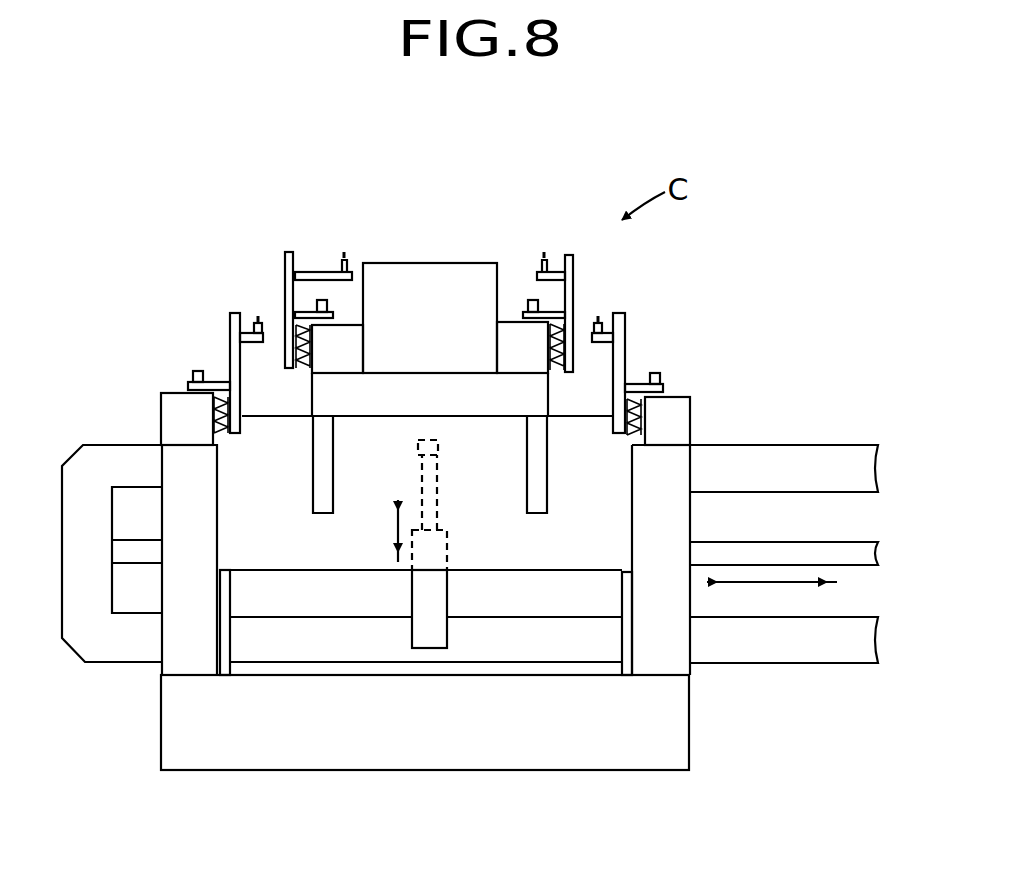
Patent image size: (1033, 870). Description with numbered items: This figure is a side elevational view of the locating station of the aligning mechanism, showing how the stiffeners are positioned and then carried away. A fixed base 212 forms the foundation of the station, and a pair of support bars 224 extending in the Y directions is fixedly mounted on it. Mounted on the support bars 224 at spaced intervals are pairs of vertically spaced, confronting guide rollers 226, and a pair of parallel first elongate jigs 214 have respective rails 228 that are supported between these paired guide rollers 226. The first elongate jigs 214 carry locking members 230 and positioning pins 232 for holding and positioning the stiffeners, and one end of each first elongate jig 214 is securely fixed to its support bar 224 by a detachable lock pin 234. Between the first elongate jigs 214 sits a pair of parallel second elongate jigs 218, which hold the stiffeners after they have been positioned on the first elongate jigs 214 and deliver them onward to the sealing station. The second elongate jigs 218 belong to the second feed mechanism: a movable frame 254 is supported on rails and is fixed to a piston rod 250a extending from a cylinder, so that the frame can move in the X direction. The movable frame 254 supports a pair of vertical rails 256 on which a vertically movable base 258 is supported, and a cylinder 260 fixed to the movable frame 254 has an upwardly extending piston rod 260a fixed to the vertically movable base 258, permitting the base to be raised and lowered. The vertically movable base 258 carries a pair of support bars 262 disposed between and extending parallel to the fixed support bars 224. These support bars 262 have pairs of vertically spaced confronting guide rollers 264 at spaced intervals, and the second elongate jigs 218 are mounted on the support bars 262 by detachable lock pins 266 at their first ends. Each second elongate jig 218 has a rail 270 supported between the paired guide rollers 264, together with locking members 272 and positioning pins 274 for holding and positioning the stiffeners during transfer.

The fixed base 212 is at (378, 760).
The first elongate jig 214 is at (228, 310).
The second elongate jig 218 is at (284, 246).
The support bar 224 is at (178, 420).
The guide roller 226 is at (228, 408).
The rail 228 is at (239, 440).
The locking member 230 is at (235, 312).
The positioning pin 232 is at (258, 320).
The detachable lock pin 234 is at (196, 372).
The piston rod 250a is at (790, 548).
The movable frame 254 is at (768, 640).
The vertical rail 256 is at (232, 635).
The vertically movable base 258 is at (568, 545).
The cylinder 260 is at (435, 628).
The piston rod 260a is at (452, 516).
The support bar 262 is at (352, 370).
The guide roller 264 is at (365, 330).
The detachable lock pin 266 is at (322, 300).
The rail 270 is at (302, 358).
The locking member 272 is at (293, 255).
The positioning pin 274 is at (345, 258).